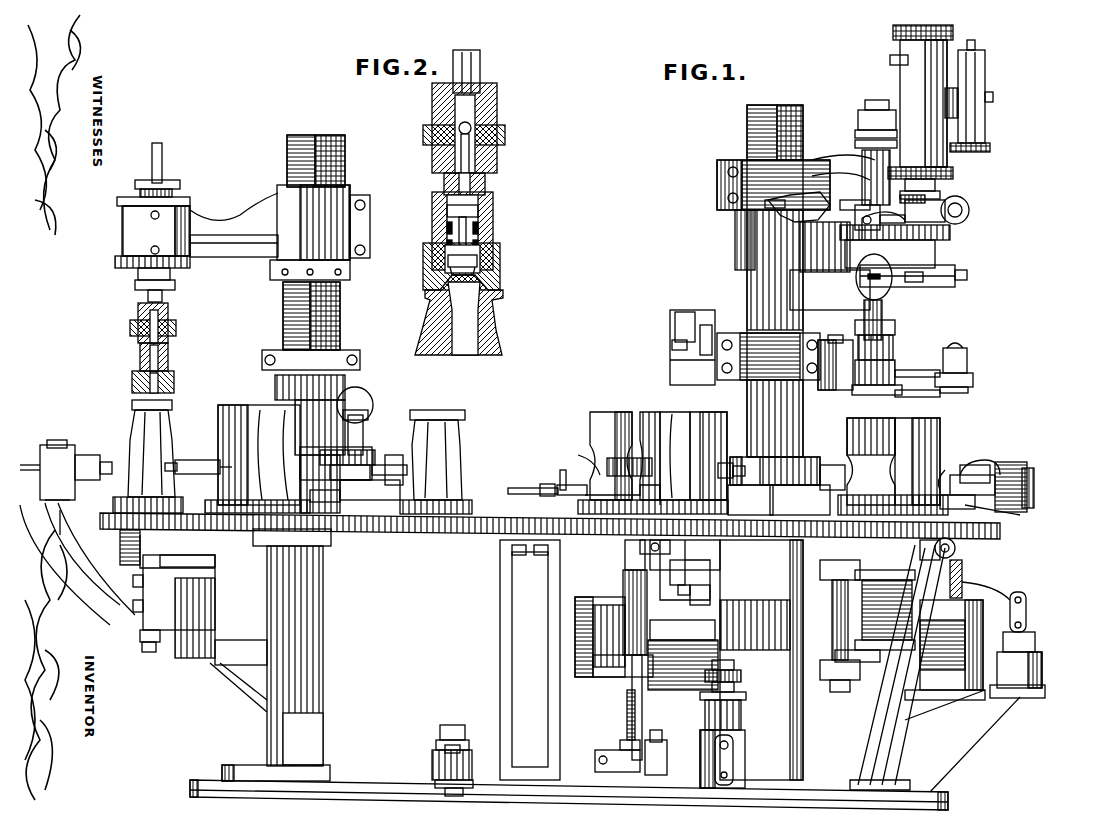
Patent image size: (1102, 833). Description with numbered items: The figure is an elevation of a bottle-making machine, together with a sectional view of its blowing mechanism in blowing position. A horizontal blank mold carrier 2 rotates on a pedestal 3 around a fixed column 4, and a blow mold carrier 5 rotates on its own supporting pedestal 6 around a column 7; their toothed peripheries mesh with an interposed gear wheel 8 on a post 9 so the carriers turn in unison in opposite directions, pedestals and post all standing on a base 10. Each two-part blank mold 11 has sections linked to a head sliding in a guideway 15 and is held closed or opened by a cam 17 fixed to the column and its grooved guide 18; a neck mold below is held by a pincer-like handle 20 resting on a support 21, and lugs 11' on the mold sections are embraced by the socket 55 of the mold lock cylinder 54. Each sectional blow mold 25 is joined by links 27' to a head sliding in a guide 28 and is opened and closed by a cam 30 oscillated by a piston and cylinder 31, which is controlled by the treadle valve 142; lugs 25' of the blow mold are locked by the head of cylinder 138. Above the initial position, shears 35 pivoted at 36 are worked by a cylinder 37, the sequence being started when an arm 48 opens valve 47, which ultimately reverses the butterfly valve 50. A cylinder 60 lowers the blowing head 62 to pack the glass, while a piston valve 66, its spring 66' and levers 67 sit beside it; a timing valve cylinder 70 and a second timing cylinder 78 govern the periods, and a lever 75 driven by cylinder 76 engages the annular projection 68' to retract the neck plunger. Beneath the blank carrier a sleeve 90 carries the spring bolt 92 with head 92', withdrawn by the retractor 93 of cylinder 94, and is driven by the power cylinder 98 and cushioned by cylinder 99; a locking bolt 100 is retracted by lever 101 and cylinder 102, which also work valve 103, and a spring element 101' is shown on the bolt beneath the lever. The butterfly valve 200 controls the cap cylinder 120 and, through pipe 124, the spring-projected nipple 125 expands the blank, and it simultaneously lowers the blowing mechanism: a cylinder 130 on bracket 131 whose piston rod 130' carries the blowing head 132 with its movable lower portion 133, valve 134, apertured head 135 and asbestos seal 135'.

In FIG. 1, the blank mold carrier 2 is at (590, 536).
In FIG. 1, the pedestal 3 is at (805, 735).
In FIG. 1, the column 4 is at (747, 128).
In FIG. 1, the blow mold carrier 5 is at (440, 515).
In FIG. 1, the supporting pedestal 6 is at (323, 600).
In FIG. 1, the column 7 is at (340, 330).
In FIG. 1, the gear wheel 8 is at (522, 532).
In FIG. 1, the post 9 is at (508, 595).
In FIG. 1, the base 10 is at (430, 780).
In FIG. 1, the blank mold 11 is at (591, 450).
In FIG. 1, the lugs 11' is at (762, 460).
In FIG. 1, the guideway 15 is at (779, 500).
In FIG. 1, the cam 17 is at (803, 472).
In FIG. 1, the guide 18 is at (770, 458).
In FIG. 1, the pincer-like handle 20 is at (545, 495).
In FIG. 1, the support 21 is at (565, 490).
In FIG. 2, the blow mold 25 is at (482, 315).
In FIG. 1, the blow mold 25 is at (451, 462).
In FIG. 1, the lugs 25' is at (139, 456).
In FIG. 1, the links 27' is at (198, 454).
In FIG. 1, the guide 28 is at (375, 500).
In FIG. 1, the cam 30 is at (360, 452).
In FIG. 1, the piston and cylinder 31 is at (360, 405).
In FIG. 1, the shears 35 is at (940, 392).
In FIG. 1, the pivot 36 is at (843, 345).
In FIG. 1, the cylinder 37 is at (703, 320).
In FIG. 1, the valve 47 is at (968, 380).
In FIG. 1, the arm 48 is at (968, 352).
In FIG. 1, the butterfly valve 50 is at (968, 198).
In FIG. 1, the mold lock cylinder 54 is at (1030, 478).
In FIG. 1, the socket 55 is at (975, 470).
In FIG. 1, the cylinder 60 is at (900, 92).
In FIG. 1, the blowing head 62 is at (920, 260).
In FIG. 1, the piston valve 66 is at (854, 167).
In FIG. 1, the spring 66' is at (860, 125).
In FIG. 1, the levers 67 is at (903, 210).
In FIG. 1, the annular projection 68' is at (813, 665).
In FIG. 1, the timing valve cylinder 70 is at (935, 290).
In FIG. 1, the lever 75 is at (1028, 610).
In FIG. 1, the cylinder 76 is at (1045, 672).
In FIG. 1, the timing valve cylinder 78 is at (990, 80).
In FIG. 1, the sleeve 90 is at (725, 660).
In FIG. 1, the spring bolt 92 is at (844, 611).
In FIG. 1, the head 92' is at (884, 635).
In FIG. 1, the retractor 93 is at (745, 668).
In FIG. 1, the cylinder 94 is at (748, 750).
In FIG. 1, the power cylinder 98 is at (590, 678).
In FIG. 1, the cushioning cylinder 99 is at (985, 692).
In FIG. 1, the locking bolt 100 is at (640, 565).
In FIG. 1, the lever 101 is at (619, 707).
In FIG. 1, the spring 101' is at (609, 715).
In FIG. 1, the cylinder 102 is at (662, 755).
In FIG. 1, the valve 103 is at (622, 745).
In FIG. 1, the cylinder 120 is at (905, 246).
In FIG. 1, the pipe 124 is at (968, 578).
In FIG. 1, the nipple 125 is at (957, 550).
In FIG. 1, the cylinder 130 is at (130, 211).
In FIG. 2, the piston rod 130' is at (496, 71).
In FIG. 1, the piston rod 130' is at (185, 292).
In FIG. 1, the bracket 131 is at (225, 225).
In FIG. 2, the blowing head 132 is at (505, 255).
In FIG. 1, the blowing head 132 is at (174, 382).
In FIG. 2, the lower vertically movable portion 133 is at (495, 210).
In FIG. 2, the valve 134 is at (497, 118).
In FIG. 1, the valve 134 is at (172, 320).
In FIG. 2, the apertured head 135 is at (499, 234).
In FIG. 1, the apertured head 135 is at (185, 354).
In FIG. 2, the asbestos covering 135' is at (510, 268).
In FIG. 1, the cylinder 138 is at (55, 460).
In FIG. 1, the treadle valve 142 is at (447, 725).
In FIG. 1, the butterfly valve 200 is at (785, 210).